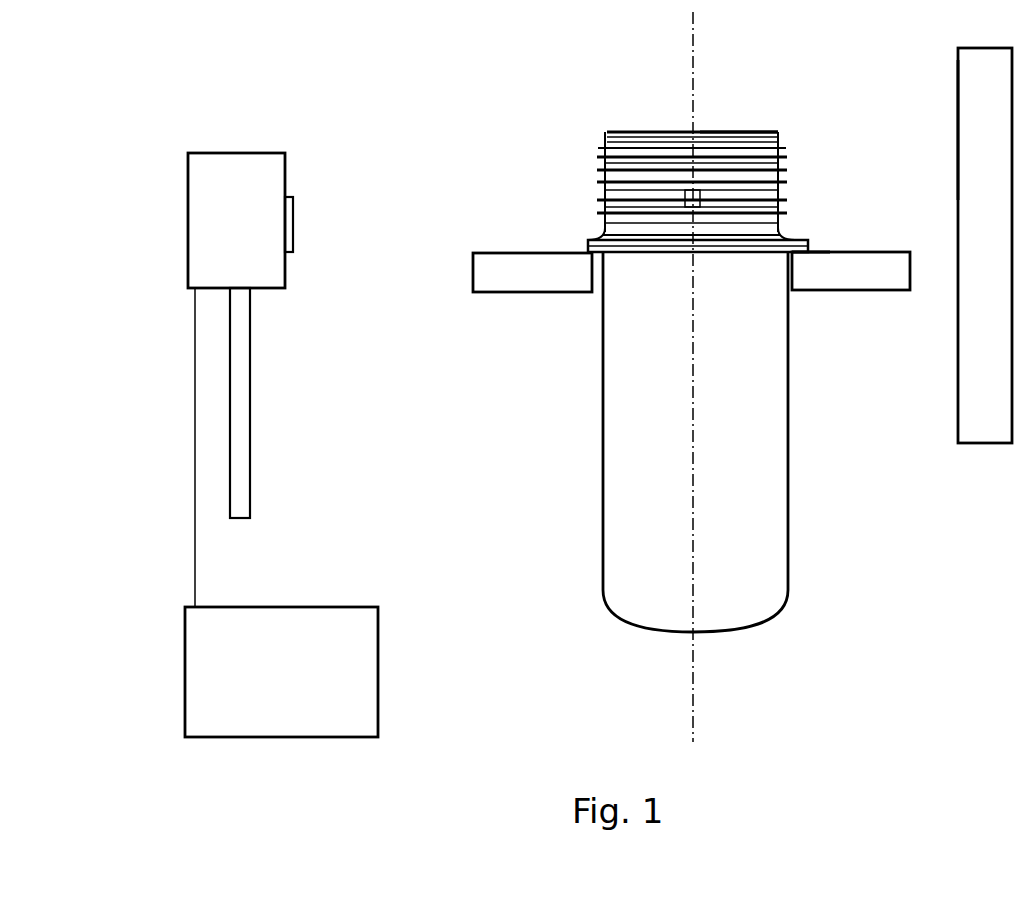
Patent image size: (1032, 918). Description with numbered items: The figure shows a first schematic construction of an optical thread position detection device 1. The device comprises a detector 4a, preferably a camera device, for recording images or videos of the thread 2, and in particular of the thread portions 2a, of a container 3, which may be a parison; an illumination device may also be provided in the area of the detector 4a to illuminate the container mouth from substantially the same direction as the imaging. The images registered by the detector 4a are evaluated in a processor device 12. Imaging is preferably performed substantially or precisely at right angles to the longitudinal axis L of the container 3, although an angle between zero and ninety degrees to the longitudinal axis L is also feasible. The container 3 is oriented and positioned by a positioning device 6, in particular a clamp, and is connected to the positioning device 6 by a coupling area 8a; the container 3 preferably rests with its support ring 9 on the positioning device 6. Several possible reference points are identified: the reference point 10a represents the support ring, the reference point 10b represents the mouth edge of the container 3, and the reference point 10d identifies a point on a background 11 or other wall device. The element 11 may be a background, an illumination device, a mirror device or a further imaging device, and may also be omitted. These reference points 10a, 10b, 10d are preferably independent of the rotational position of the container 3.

The optical thread position detection device 1 is at (238, 92).
The thread 2 is at (560, 196).
The thread portions 2a is at (640, 168).
The container 3 is at (789, 603).
The detector 4a is at (267, 178).
The positioning device 6 is at (857, 283).
The coupling area 8a is at (810, 250).
The support ring 9 is at (573, 240).
The reference point 10a is at (578, 253).
The reference point 10b is at (745, 132).
The reference point 10d is at (958, 115).
The background 11 is at (988, 433).
The processor device 12 is at (357, 703).
The longitudinal axis L is at (696, 695).